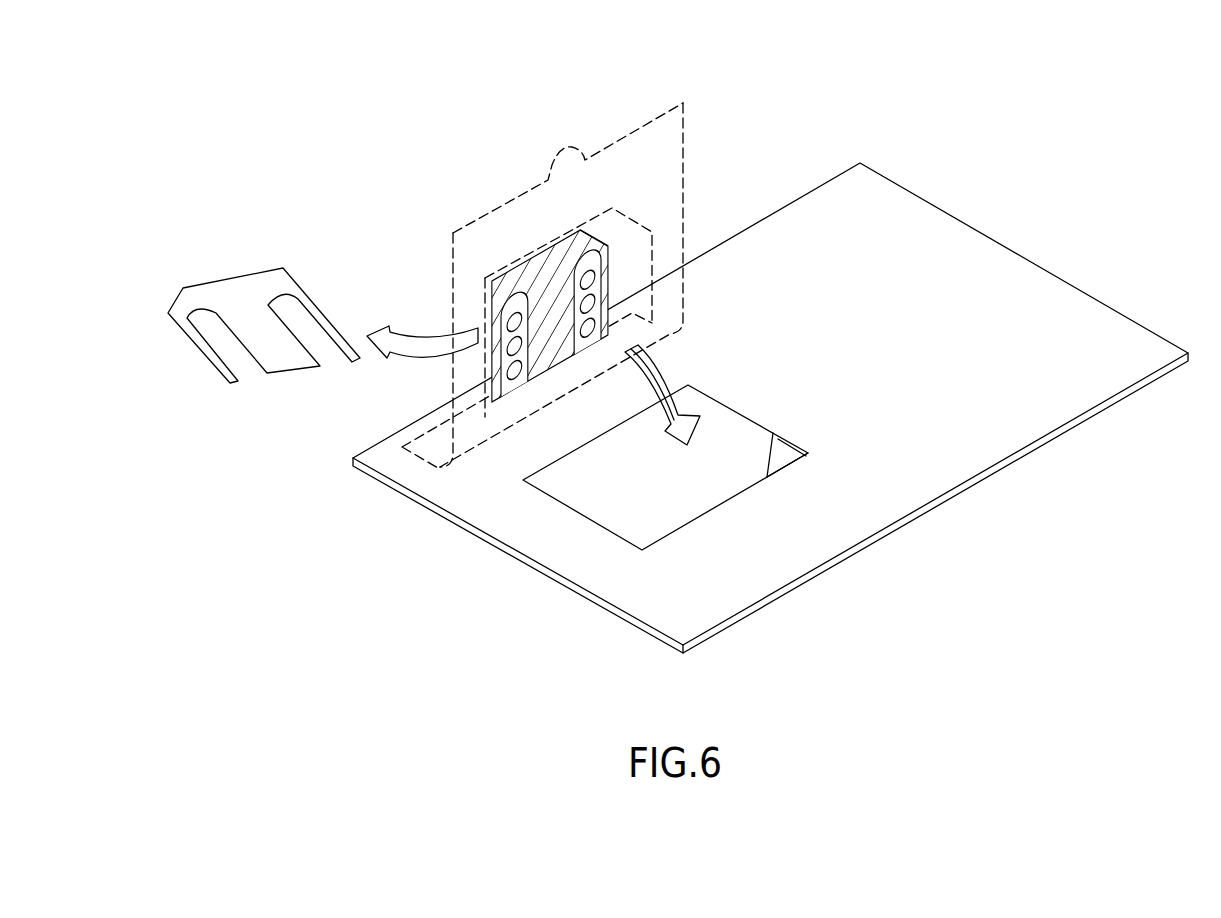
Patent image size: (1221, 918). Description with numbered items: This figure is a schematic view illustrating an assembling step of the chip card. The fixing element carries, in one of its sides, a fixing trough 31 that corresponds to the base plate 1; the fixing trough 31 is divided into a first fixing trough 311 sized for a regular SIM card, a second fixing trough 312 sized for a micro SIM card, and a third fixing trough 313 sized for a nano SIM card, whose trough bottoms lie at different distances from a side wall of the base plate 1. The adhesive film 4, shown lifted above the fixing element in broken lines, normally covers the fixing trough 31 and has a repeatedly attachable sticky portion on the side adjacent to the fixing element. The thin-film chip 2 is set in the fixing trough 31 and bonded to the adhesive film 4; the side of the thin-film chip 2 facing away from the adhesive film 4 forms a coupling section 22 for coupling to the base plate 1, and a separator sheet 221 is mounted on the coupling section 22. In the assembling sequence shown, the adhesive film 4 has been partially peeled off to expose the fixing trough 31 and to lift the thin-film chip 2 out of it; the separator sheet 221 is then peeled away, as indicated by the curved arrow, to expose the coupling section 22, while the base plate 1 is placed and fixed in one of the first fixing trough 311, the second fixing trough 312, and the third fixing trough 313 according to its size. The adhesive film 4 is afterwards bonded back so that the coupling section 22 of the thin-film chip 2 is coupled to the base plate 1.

The base plate 1 is at (613, 480).
The thin-film chip 2 is at (609, 230).
The coupling section 22 is at (613, 247).
The separator sheet 221 is at (237, 303).
The adhesive film 4 is at (617, 127).
The fixing trough 31 is at (787, 455).
The first fixing trough 311 is at (881, 519).
The second fixing trough 312 is at (917, 522).
The third fixing trough 313 is at (938, 529).